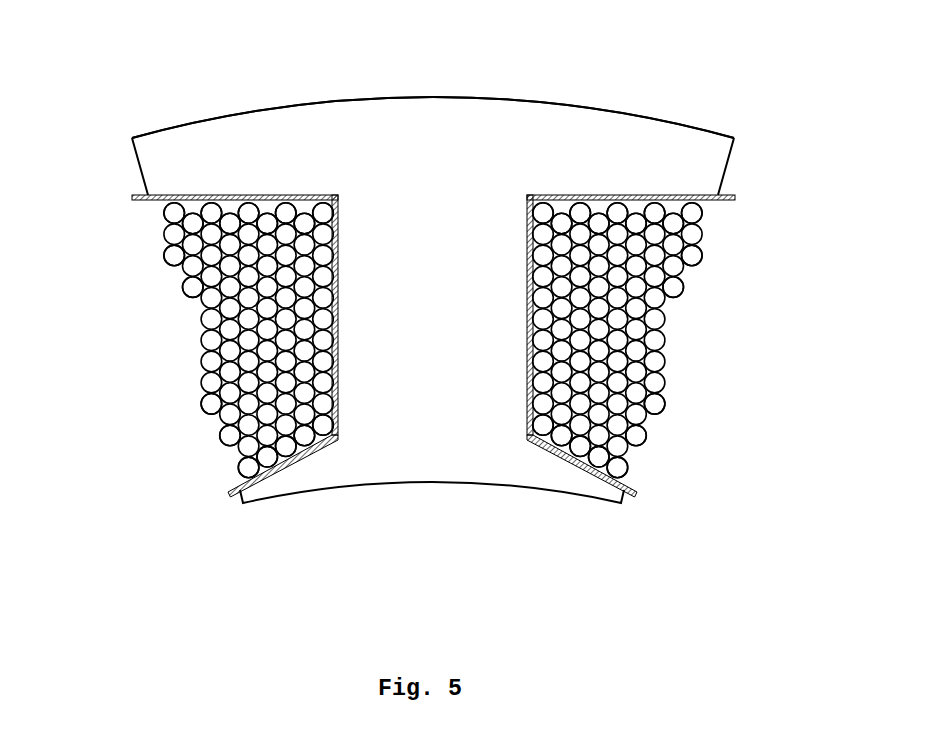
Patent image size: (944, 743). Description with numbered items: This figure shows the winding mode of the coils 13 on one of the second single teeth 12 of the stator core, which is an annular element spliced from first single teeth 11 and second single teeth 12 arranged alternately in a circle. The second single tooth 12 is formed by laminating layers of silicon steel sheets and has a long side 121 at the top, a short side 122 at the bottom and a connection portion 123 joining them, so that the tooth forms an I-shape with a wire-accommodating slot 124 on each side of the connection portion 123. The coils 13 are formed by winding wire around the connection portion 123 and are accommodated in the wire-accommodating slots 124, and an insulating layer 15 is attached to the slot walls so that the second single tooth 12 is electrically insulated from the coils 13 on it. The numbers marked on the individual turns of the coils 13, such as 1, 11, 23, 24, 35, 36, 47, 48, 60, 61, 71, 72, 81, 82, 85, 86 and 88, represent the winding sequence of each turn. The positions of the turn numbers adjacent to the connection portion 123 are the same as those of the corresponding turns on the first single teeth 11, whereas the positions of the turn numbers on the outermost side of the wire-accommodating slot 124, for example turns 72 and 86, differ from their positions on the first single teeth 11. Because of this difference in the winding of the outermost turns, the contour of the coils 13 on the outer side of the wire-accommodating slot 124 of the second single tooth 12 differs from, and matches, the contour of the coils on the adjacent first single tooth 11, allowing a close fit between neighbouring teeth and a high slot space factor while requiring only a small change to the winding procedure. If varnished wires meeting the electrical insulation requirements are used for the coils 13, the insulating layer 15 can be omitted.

The second single teeth 12 is at (412, 318).
The long side 121 is at (230, 130).
The short side 122 is at (440, 468).
The connection portion 123 is at (385, 373).
The wire-accommodating slot 124 is at (743, 267).
The coils 13 is at (645, 350).
The insulating layer 15 is at (313, 194).
The coil turn 1 is at (433, 425).
The first single teeth 11 is at (433, 213).
The coil turn 23 is at (433, 435).
The coil turn 24 is at (433, 446).
The coil turn 35 is at (433, 213).
The coil turn 36 is at (433, 223).
The coil turn 47 is at (433, 456).
The coil turn 48 is at (432, 467).
The coil turn 60 is at (432, 213).
The coil turn 61 is at (433, 223).
The coil turn 71 is at (433, 435).
The coil turn 72 is at (433, 404).
The coil turn 81 is at (433, 213).
The coil turn 82 is at (433, 223).
The coil turn 85 is at (433, 287).
The coil turn 86 is at (433, 255).
The coil turn 88 is at (433, 213).